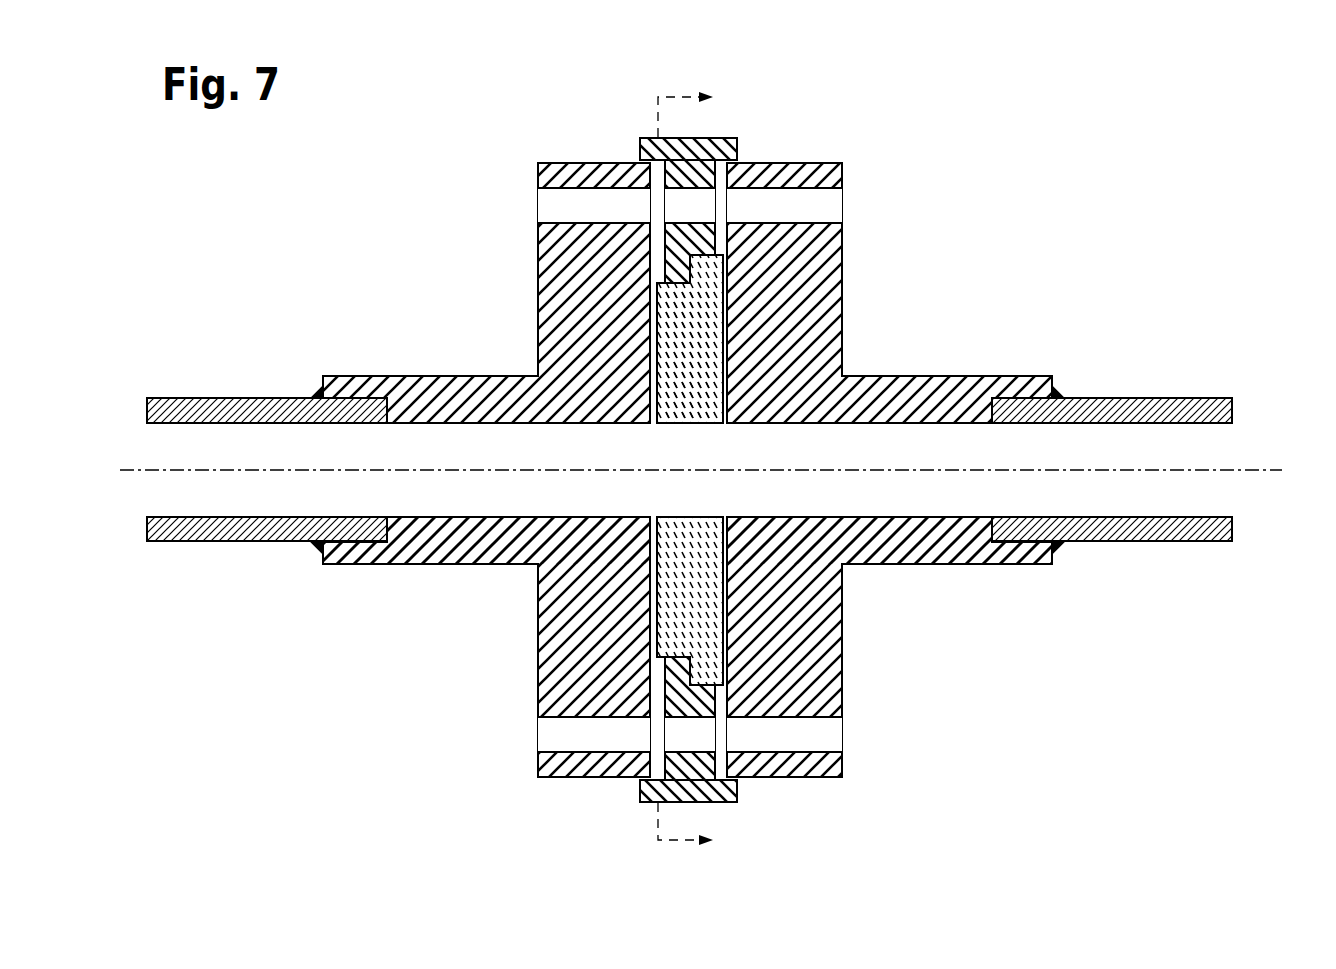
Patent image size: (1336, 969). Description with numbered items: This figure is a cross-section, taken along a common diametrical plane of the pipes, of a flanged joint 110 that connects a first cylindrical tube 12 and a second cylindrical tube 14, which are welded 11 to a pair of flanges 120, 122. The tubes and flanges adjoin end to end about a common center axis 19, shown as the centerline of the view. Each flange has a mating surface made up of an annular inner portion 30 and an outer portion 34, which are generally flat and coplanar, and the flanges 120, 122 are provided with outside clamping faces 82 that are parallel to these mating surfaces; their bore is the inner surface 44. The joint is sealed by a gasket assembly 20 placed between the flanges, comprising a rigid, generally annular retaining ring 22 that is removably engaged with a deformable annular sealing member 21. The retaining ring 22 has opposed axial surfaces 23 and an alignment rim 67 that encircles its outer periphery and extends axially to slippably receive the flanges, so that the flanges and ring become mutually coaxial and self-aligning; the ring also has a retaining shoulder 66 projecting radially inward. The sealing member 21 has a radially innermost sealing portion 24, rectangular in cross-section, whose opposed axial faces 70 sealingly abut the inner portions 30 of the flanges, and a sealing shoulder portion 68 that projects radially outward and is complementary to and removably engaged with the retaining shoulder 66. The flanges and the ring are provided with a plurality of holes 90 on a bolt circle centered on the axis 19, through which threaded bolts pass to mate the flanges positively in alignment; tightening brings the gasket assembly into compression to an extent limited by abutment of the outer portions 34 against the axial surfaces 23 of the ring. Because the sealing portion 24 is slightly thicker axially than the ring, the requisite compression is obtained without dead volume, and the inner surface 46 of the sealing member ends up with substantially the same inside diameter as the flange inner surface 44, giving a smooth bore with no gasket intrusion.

The weld 11 is at (318, 393).
The first cylindrical tube 12 is at (237, 397).
The second cylindrical tube 14 is at (1143, 398).
The common center axis 19 is at (1243, 472).
The gasket assembly 20 is at (680, 629).
The sealing member 21 is at (677, 424).
The retaining ring 22 is at (720, 143).
The axial surfaces 23 is at (653, 237).
The sealing portion 24 is at (700, 347).
The inner portion 30 is at (653, 547).
The outer portion 34 is at (752, 745).
The inner surface of flanges 44 is at (540, 516).
The inner surface of sealing member 46 is at (702, 517).
The retaining shoulder 66 is at (677, 676).
The alignment rim 67 is at (642, 807).
The sealing shoulder portion 68 is at (700, 270).
The axial faces 70 is at (648, 378).
The outside clamping faces 82 is at (843, 612).
The holes 90 is at (567, 210).
The joint 110 is at (702, 472).
The flange 120 is at (400, 565).
The flange 122 is at (942, 567).